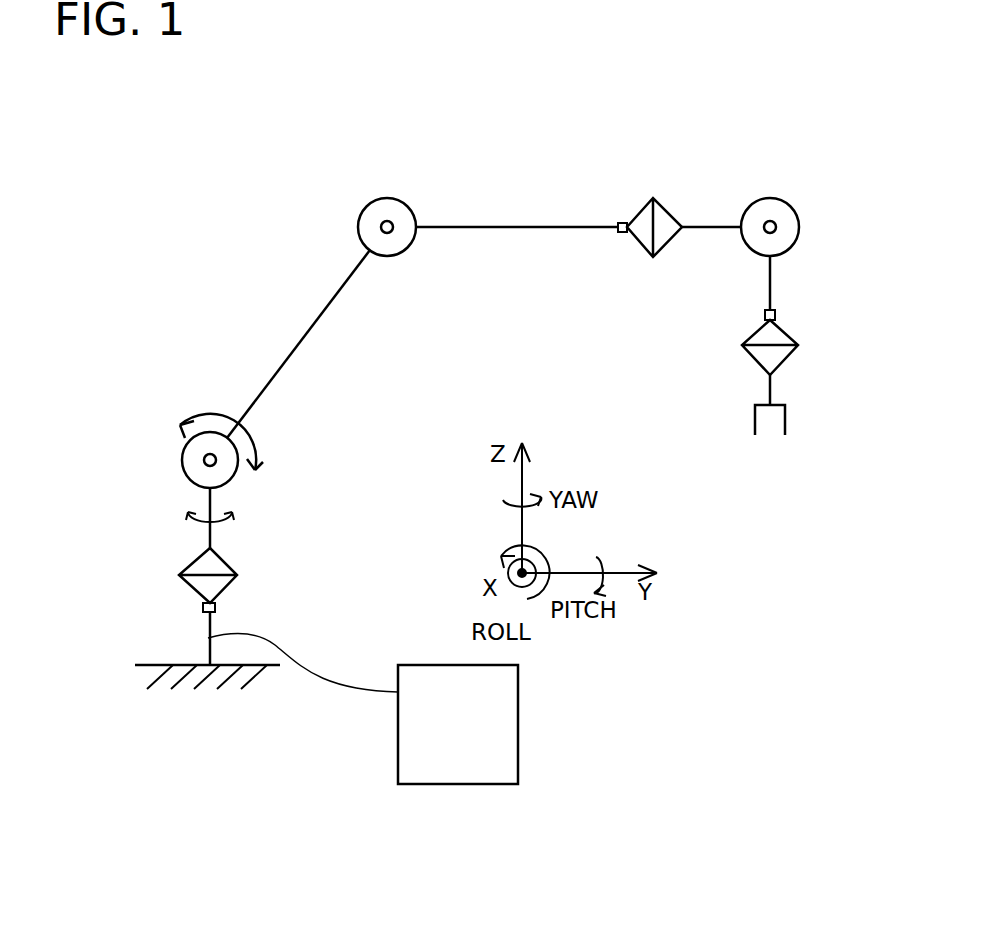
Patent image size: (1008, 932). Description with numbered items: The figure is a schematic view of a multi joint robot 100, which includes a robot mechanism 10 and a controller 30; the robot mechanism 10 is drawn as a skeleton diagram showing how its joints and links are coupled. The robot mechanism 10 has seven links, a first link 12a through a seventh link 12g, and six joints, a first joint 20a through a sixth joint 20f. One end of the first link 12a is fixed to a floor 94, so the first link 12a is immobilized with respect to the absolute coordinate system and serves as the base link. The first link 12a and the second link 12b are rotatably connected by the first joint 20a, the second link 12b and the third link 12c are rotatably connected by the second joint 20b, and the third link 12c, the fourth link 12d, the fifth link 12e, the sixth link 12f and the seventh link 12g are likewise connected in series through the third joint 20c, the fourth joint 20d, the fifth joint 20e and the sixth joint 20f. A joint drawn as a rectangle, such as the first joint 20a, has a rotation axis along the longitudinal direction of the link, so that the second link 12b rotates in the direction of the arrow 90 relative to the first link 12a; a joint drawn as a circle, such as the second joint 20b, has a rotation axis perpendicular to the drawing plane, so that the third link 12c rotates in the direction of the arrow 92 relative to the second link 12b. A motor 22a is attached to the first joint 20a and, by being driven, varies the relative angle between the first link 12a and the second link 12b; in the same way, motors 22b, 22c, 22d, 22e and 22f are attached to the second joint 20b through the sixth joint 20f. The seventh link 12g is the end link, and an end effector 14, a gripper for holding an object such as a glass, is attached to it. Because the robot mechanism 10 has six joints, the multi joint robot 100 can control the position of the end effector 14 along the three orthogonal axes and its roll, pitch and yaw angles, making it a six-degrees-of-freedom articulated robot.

The multi joint robot 100 is at (618, 90).
The robot mechanism 10 is at (355, 323).
The first link 12a is at (206, 622).
The second link 12b is at (207, 503).
The third link 12c is at (296, 332).
The fourth link 12d is at (518, 226).
The fifth link 12e is at (711, 226).
The sixth link 12f is at (772, 285).
The seventh link 12g is at (771, 390).
The end effector 14 is at (786, 420).
The first joint 20a is at (186, 570).
The second joint 20b is at (183, 460).
The third joint 20c is at (359, 218).
The fourth joint 20d is at (636, 212).
The fifth joint 20e is at (800, 226).
The sixth joint 20f is at (752, 335).
The motor 22a is at (216, 606).
The motor 22b is at (215, 466).
The motor 22c is at (387, 221).
The motor 22d is at (622, 234).
The motor 22e is at (770, 221).
The motor 22f is at (776, 315).
The controller 30 is at (518, 723).
The arrow 90 is at (224, 526).
The arrow 92 is at (250, 433).
The floor 94 is at (145, 663).